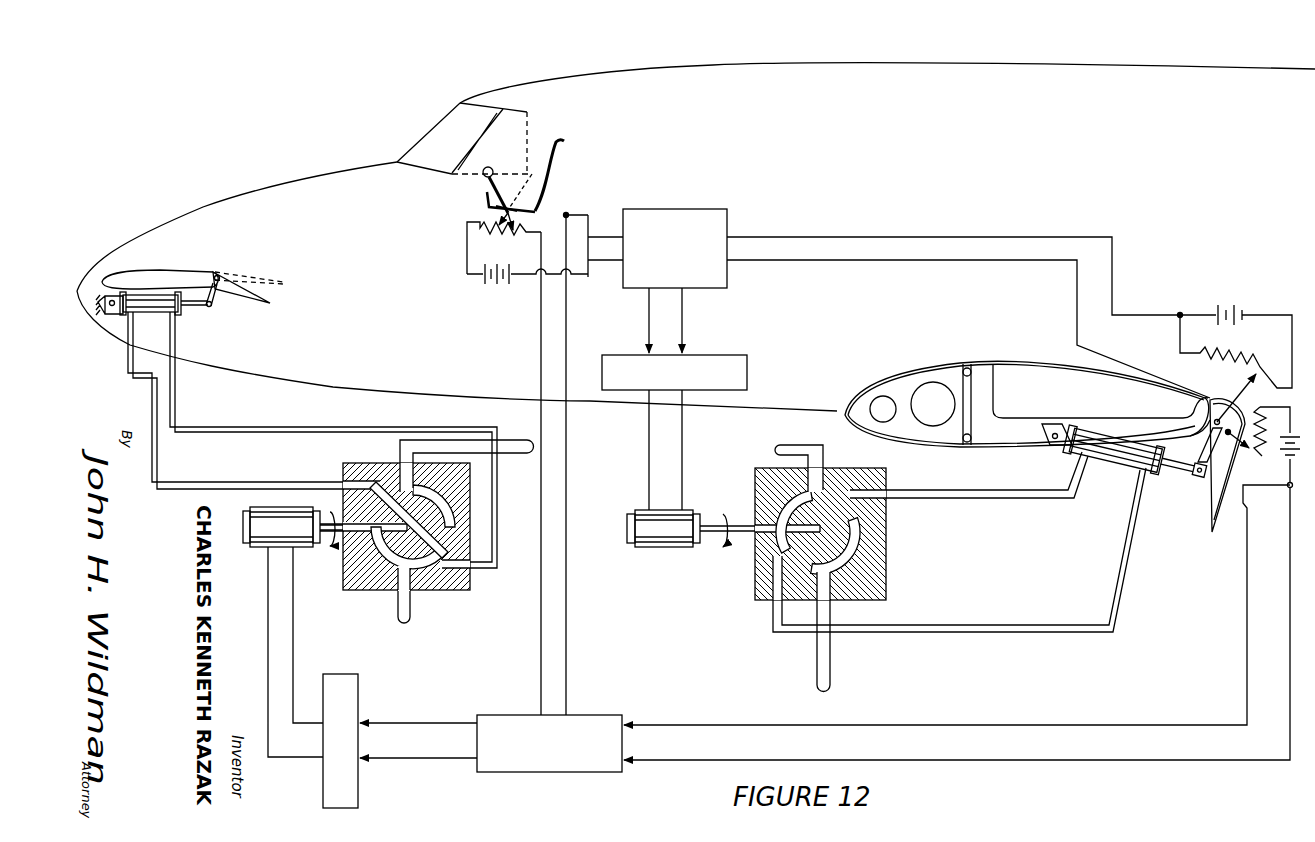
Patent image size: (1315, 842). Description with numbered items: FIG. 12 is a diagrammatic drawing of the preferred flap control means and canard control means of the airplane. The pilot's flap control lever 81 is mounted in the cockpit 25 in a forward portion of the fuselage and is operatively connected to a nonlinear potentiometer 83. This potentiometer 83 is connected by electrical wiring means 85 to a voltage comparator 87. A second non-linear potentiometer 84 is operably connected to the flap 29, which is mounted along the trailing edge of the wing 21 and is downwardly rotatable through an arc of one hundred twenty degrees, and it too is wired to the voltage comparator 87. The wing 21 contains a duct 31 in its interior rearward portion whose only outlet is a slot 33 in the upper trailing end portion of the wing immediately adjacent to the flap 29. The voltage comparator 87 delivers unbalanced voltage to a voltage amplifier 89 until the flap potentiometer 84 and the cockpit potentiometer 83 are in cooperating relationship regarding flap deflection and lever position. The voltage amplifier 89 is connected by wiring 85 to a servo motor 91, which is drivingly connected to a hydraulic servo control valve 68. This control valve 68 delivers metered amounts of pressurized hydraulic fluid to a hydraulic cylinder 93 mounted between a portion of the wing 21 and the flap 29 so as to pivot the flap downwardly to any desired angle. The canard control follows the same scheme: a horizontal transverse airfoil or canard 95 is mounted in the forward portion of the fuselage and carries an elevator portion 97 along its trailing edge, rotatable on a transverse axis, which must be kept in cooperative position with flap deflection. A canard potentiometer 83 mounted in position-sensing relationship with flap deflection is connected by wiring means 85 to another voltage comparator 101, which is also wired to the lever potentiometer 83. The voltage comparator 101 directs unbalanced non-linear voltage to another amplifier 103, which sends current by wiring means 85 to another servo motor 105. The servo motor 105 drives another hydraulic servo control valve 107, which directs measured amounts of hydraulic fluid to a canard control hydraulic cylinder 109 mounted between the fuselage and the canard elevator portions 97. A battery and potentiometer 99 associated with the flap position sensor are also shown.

The wing 21 is at (911, 382).
The cockpit 25 is at (440, 140).
The flap 29 is at (1212, 508).
The duct 31 is at (1017, 402).
The slot 33 is at (1203, 397).
The hydraulic servo control valve 68 is at (888, 527).
The flap control lever 81 is at (486, 181).
The nonlinear potentiometer 83 is at (467, 250).
The flap potentiometer 84 is at (1207, 328).
The electrical wiring means 85 is at (589, 223).
The voltage comparator 87 is at (697, 220).
The voltage amplifier 89 is at (747, 366).
The servo motor 91 is at (660, 547).
The hydraulic cylinder 93 is at (1115, 463).
The canard 95 is at (167, 277).
The elevator portion 97 is at (265, 303).
The feedback potentiometer battery 99 is at (1263, 478).
The voltage comparator 101 is at (563, 760).
The amplifier 103 is at (348, 705).
The servo motor 105 is at (283, 507).
The hydraulic servo control valve 107 is at (383, 495).
The canard control hydraulic cylinder 109 is at (145, 311).